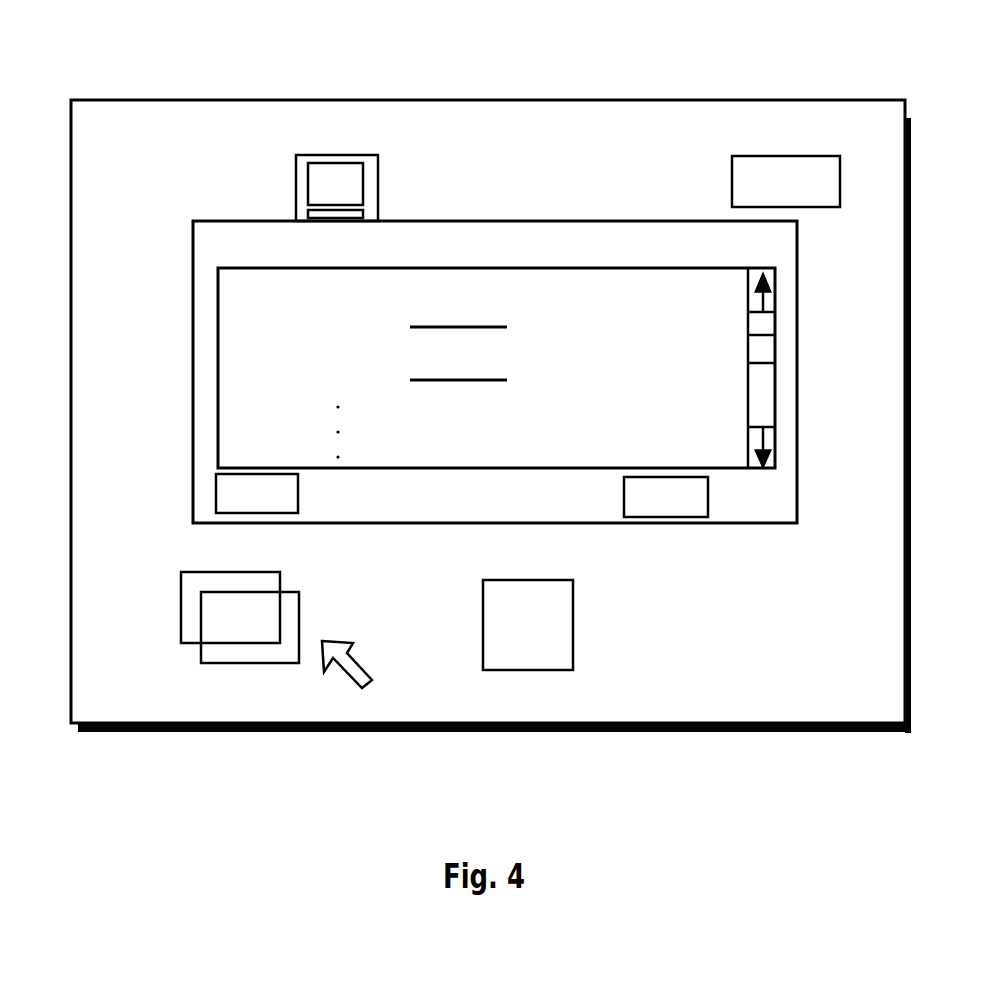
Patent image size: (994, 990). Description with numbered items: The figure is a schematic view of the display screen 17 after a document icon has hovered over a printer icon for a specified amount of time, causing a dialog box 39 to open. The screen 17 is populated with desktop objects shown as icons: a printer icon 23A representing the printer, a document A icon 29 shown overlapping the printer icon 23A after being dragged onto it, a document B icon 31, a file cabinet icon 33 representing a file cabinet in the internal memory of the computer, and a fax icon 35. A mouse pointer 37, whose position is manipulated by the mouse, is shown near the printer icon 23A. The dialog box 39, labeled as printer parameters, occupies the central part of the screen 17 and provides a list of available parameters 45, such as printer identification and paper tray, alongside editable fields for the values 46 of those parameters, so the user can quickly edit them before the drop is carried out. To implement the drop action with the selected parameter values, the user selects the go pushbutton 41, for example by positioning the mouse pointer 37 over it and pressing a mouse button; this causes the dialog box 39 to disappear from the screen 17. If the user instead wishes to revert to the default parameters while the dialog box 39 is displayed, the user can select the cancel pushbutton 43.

The screen 17 is at (92, 126).
The file cabinet icon 33 is at (379, 205).
The fax icon 35 is at (760, 156).
The dialog box 39 is at (193, 255).
The available parameters 45 is at (258, 377).
The values 46 is at (507, 329).
The go pushbutton 41 is at (215, 487).
The cancel pushbutton 43 is at (670, 519).
The printer icon 23A is at (178, 585).
The document A icon 29 is at (290, 592).
The mouse pointer 37 is at (355, 657).
The document B icon 31 is at (503, 580).